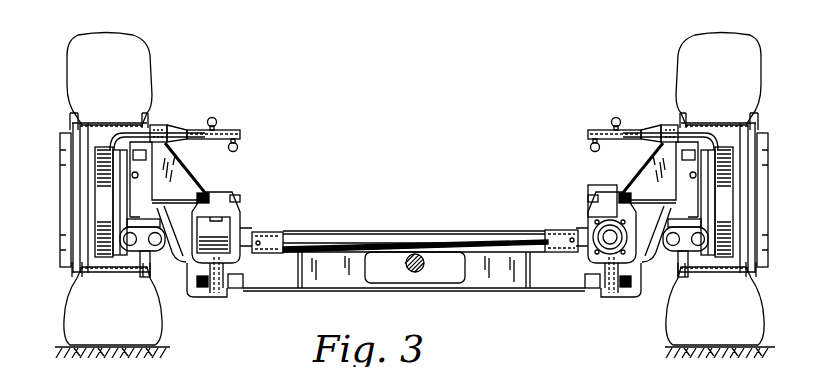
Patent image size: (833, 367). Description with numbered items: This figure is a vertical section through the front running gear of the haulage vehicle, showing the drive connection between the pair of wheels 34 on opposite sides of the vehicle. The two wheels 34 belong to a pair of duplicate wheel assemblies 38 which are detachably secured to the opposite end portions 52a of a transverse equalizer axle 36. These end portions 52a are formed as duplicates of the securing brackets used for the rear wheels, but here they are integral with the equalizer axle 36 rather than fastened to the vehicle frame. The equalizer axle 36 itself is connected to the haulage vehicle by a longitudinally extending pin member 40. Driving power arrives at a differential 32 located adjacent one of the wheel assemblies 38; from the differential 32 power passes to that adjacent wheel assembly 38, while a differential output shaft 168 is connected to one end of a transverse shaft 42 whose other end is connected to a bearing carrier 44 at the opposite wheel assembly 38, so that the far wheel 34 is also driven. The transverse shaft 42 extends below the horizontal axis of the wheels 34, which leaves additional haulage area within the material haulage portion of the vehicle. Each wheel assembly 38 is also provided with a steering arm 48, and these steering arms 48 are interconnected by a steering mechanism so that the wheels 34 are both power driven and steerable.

The differential 32 is at (590, 255).
The wheel 34 is at (150, 52).
The equalizer axle 36 is at (337, 277).
The wheel assembly 38 is at (204, 168).
The pin member 40 is at (418, 252).
The transverse shaft 42 is at (362, 236).
The bearing carrier 44 is at (215, 237).
The steering arm 48 is at (218, 118).
The equalizer axle end portion 52a is at (233, 210).
The differential output shaft 168 is at (548, 232).